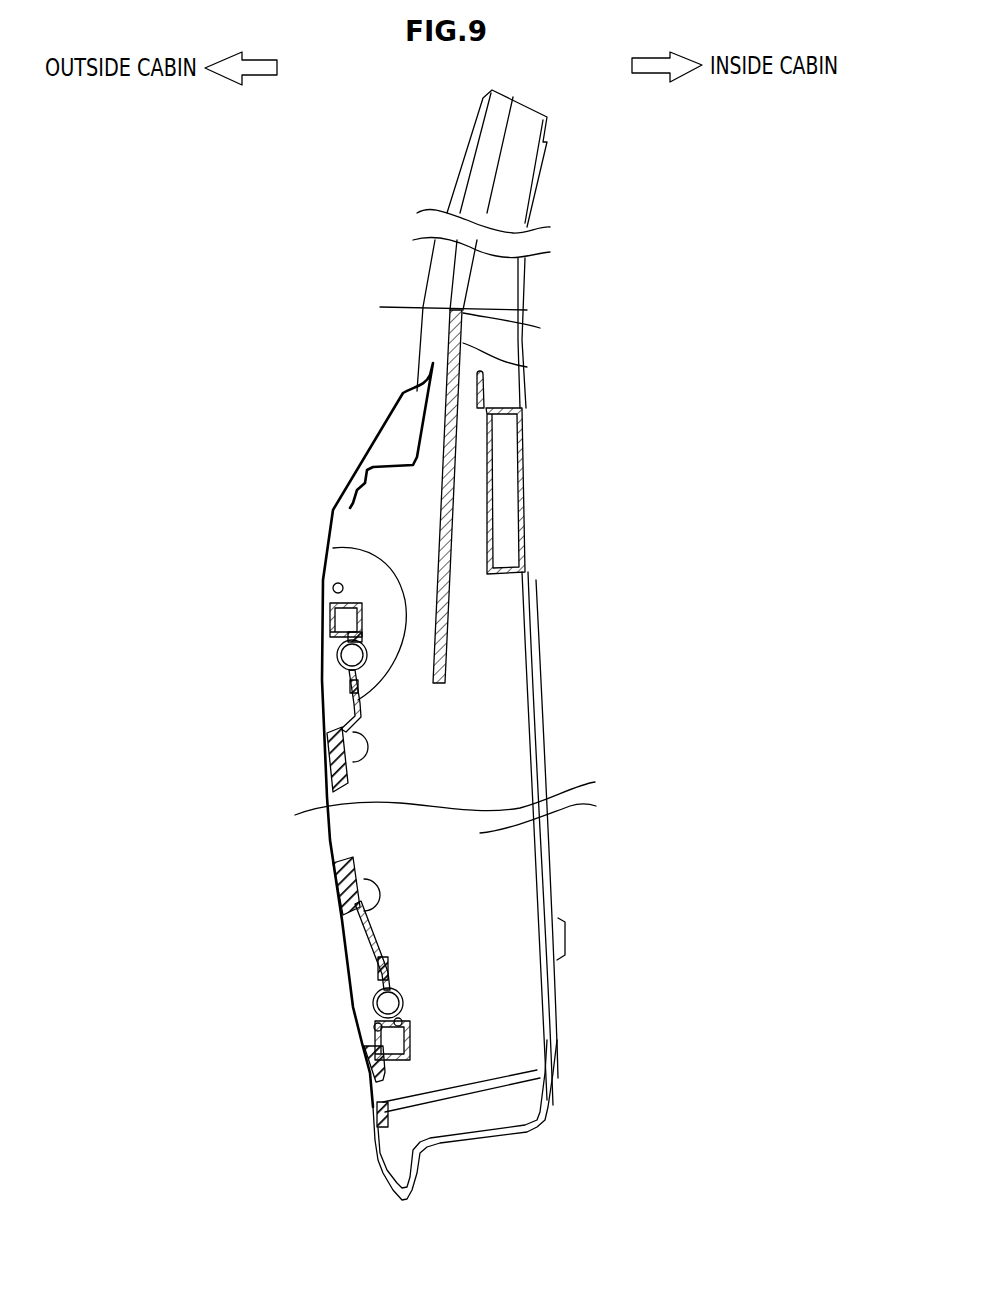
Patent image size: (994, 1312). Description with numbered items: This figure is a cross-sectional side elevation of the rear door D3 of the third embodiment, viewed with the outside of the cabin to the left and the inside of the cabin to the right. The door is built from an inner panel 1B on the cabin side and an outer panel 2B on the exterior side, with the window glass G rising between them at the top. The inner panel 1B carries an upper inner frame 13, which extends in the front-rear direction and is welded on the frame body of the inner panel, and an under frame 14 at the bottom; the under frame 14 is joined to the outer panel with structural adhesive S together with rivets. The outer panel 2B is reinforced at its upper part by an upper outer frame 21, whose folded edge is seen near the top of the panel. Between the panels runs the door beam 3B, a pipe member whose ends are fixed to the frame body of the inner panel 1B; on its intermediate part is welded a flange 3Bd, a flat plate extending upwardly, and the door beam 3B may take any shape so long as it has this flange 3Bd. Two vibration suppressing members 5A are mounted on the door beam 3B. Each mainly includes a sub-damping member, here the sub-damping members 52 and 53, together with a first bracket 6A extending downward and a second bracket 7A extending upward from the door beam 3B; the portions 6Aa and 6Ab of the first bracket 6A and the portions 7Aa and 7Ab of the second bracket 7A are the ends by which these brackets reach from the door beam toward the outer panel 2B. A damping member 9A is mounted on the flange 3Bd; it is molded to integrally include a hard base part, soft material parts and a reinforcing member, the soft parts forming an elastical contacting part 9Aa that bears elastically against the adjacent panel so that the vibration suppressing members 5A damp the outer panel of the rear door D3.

The inner panel 1B is at (536, 658).
The outer panel 2B is at (362, 452).
The upper inner frame 13 is at (500, 548).
The under frame 14 is at (453, 1090).
The upper outer frame 21 is at (417, 425).
The window glass G is at (527, 369).
The rear door D3 is at (597, 203).
The vibration suppressing member 5A is at (227, 691).
The first bracket 6A is at (367, 705).
The bracket lower end 6Aa is at (330, 730).
The bracket upper end 6Ab is at (328, 566).
The damping member 9A is at (330, 620).
The elastical contacting part 9Aa is at (327, 580).
The door beam 3B is at (337, 655).
The flange 3Bd is at (327, 622).
The sub-damping member 52 is at (335, 760).
The sub-damping member 53 is at (337, 880).
The second bracket 7A is at (395, 950).
The lower bracket upper end 7Aa is at (337, 920).
The lower bracket lower portion 7Ab is at (390, 962).
The structural adhesive S is at (360, 1116).